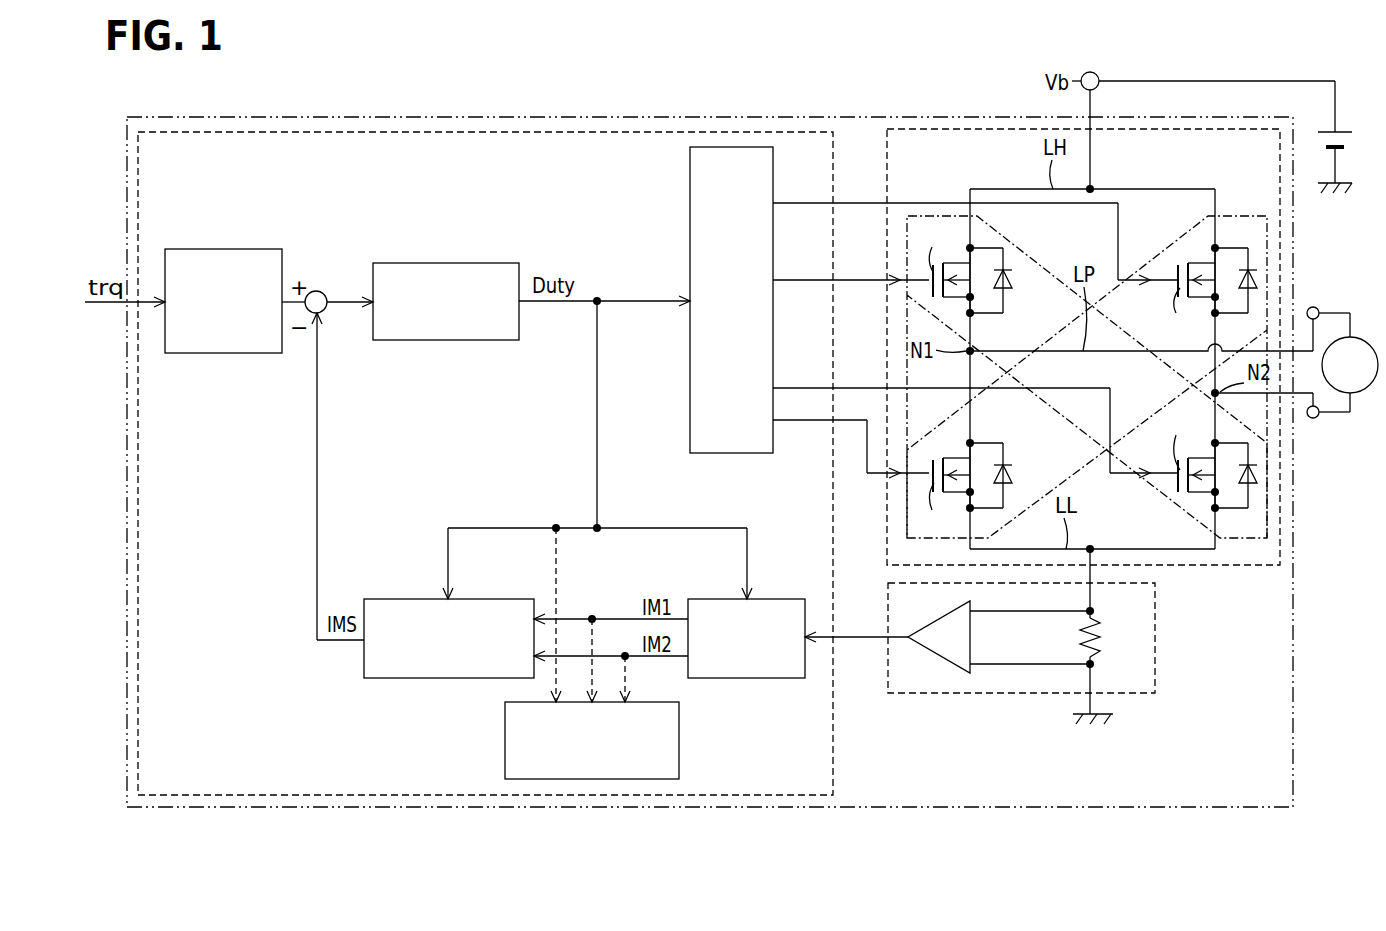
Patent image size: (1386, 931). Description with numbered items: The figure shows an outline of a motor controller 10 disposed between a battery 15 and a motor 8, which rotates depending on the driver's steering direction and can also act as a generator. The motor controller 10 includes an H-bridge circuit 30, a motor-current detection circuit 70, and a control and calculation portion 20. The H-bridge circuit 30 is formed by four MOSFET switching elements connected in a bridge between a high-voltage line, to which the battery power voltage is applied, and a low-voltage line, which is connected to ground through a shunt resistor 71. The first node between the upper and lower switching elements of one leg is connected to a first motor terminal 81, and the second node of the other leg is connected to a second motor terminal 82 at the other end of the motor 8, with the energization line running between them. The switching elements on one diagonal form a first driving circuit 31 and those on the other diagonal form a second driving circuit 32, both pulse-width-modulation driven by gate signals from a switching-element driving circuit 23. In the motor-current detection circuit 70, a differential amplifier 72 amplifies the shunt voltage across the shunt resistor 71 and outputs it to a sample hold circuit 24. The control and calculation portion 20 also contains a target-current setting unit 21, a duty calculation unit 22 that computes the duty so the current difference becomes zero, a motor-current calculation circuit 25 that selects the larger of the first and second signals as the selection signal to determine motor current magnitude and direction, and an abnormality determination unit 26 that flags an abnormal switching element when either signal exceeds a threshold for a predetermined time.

The motor controller 10 is at (303, 117).
The control and calculation portion 20 is at (833, 748).
The target-current setting unit 21 is at (195, 249).
The duty calculation unit 22 is at (415, 263).
The switching-element driving circuit 23 is at (690, 212).
The sample hold circuit 24 is at (718, 598).
The motor-current calculation circuit 25 is at (412, 598).
The abnormality determination unit 26 is at (679, 738).
The H-bridge circuit 30 is at (882, 180).
The first driving circuit 31 is at (930, 215).
The second driving circuit 32 is at (1240, 215).
The battery 15 is at (1345, 132).
The motor 8 is at (1364, 340).
The first motor terminal 81 is at (1311, 306).
The second motor terminal 82 is at (1312, 418).
The motor-current detection circuit 70 is at (1155, 637).
The shunt resistor 71 is at (1104, 638).
The differential amplifier 72 is at (970, 637).